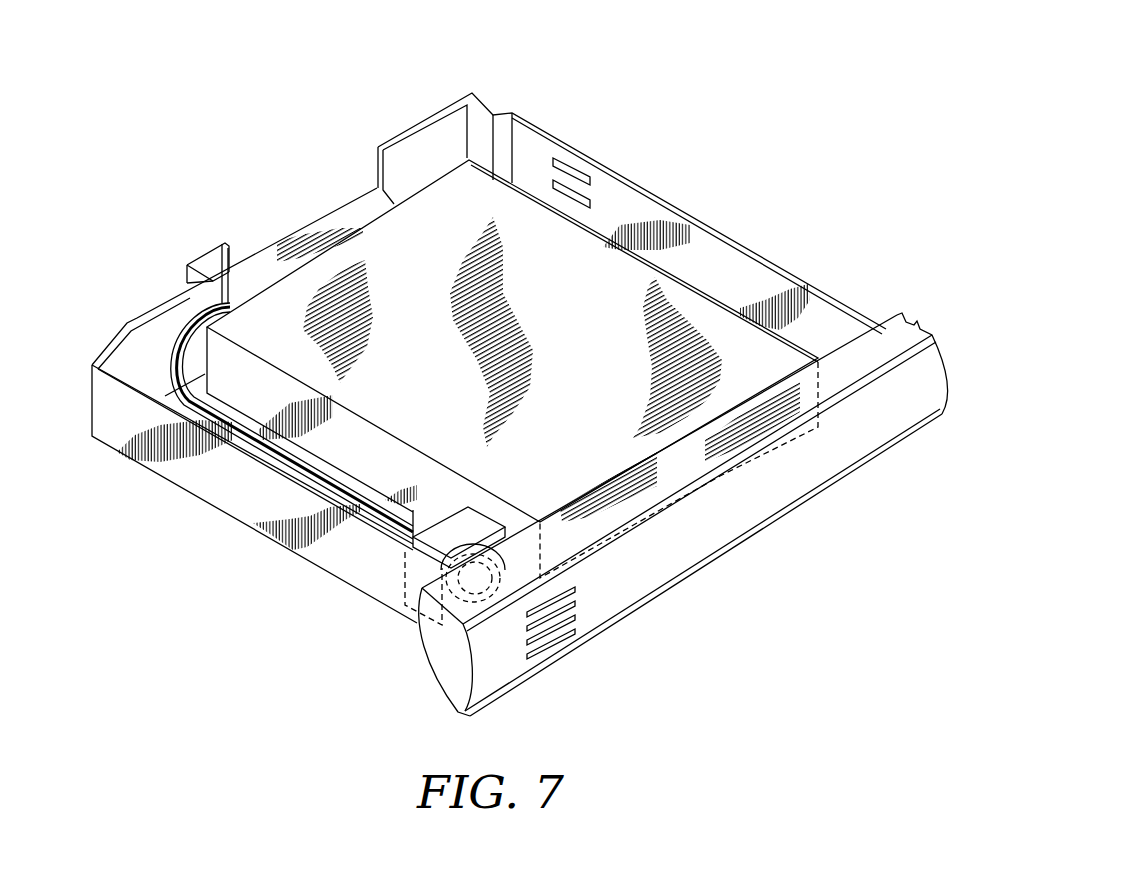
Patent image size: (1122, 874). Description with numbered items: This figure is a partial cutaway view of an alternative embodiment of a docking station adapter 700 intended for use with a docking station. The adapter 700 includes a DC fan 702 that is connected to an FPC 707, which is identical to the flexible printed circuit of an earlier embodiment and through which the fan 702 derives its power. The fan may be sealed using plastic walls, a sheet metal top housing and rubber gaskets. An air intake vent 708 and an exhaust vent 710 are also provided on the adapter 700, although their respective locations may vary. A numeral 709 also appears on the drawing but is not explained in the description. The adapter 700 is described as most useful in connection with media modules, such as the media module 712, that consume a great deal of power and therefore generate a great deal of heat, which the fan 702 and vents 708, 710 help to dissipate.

The docking station adapter 700 is at (938, 326).
The DC fan 702 is at (480, 523).
The FPC 707 is at (333, 207).
The air intake vent 708 is at (183, 320).
The vent slots 709 is at (577, 160).
The exhaust vent 710 is at (586, 604).
The media module 712 is at (623, 305).